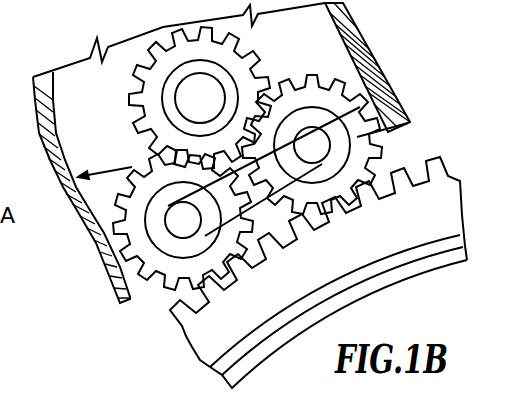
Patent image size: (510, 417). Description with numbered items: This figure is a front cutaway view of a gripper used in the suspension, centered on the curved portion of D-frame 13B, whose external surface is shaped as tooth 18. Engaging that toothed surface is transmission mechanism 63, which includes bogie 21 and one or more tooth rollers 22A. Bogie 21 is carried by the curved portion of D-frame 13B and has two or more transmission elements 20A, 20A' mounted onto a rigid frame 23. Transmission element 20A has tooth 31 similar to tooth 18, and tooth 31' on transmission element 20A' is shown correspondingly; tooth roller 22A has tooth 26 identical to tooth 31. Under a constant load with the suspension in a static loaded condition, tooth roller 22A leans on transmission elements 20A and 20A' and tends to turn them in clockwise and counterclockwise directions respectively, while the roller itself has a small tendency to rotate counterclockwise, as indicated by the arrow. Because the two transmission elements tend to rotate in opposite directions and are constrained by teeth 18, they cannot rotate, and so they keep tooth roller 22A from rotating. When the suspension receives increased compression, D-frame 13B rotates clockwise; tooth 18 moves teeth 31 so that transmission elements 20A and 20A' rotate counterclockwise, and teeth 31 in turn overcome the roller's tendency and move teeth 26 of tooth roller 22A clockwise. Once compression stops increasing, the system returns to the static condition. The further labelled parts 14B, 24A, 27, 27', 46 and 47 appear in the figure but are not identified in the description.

The D-frame 13B is at (192, 337).
The housing wall 14B is at (108, 284).
The tooth 18 is at (168, 305).
The transmission element 20A is at (145, 220).
The transmission element 20A' is at (355, 144).
The bogie 21 is at (113, 208).
The tooth roller 22A is at (157, 120).
The rigid frame 23 is at (293, 232).
The drive shaft 24A is at (187, 102).
The tooth 26 is at (153, 137).
The first pinion shaft 27 is at (129, 220).
The second pinion hub 27' is at (364, 123).
The tooth 31 is at (90, 277).
The second recess 31' is at (345, 86).
The drive gear hub 46 is at (165, 89).
The pinion bearing 47 is at (173, 245).
The transmission mechanism 63 is at (335, 63).